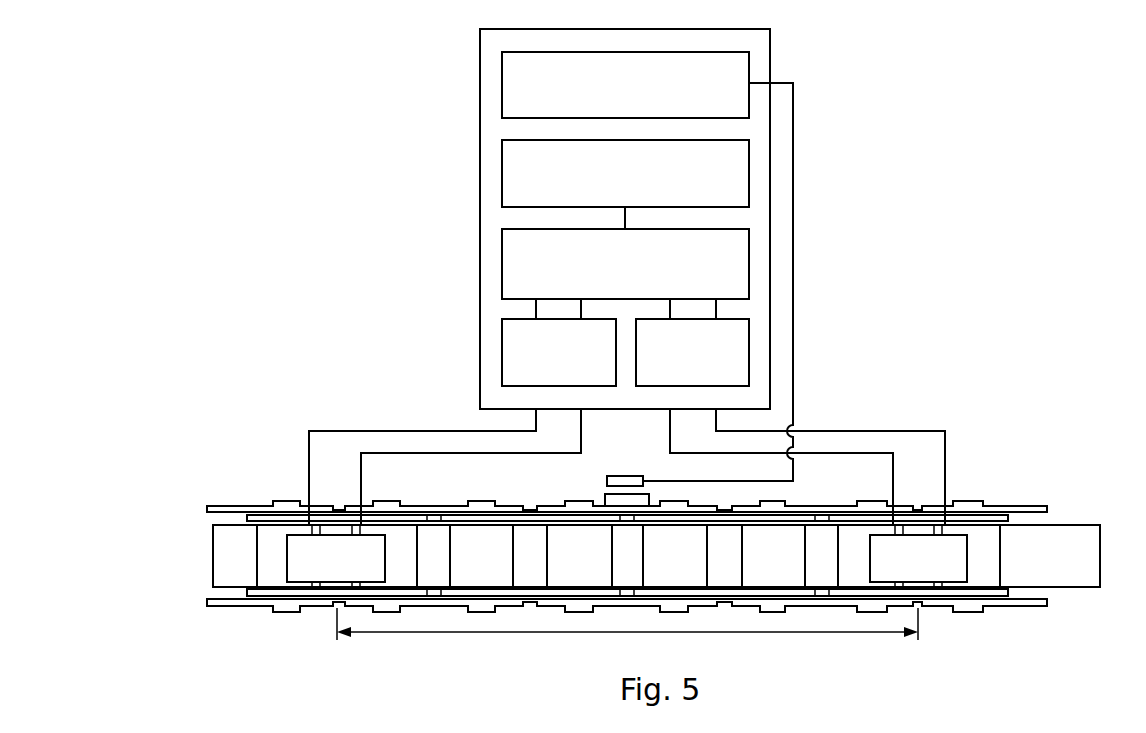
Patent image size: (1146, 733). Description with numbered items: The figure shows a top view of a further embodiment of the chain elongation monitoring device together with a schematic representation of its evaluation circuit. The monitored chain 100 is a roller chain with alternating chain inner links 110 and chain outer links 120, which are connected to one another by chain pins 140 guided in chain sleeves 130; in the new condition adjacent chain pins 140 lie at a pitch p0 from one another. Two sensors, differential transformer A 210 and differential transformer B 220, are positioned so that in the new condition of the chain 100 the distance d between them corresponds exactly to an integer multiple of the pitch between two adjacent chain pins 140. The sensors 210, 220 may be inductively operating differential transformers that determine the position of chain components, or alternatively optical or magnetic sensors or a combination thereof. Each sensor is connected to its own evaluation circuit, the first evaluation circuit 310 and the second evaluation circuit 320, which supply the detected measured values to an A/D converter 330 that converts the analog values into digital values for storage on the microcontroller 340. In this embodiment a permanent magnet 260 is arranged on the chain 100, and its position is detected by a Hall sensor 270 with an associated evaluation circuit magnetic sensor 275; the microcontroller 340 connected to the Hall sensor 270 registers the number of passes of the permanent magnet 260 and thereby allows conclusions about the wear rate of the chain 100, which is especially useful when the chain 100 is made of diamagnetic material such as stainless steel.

The chain 100 is at (178, 548).
The chain inner link 110 is at (207, 511).
The chain outer link 120 is at (230, 506).
The chain sleeve 130 is at (268, 573).
The chain pin 140 is at (290, 500).
The differential transformer A 210 is at (336, 556).
The differential transformer B 220 is at (918, 556).
The permanent magnet 260 is at (603, 492).
The Hall sensor/position detection sensor 270 is at (632, 475).
The evaluation circuit magnetic sensor 275 is at (625, 85).
The first evaluation circuit 310 is at (559, 352).
The second evaluation circuit 320 is at (692, 352).
The A/D converter 330 is at (625, 264).
The microcontroller/control unit 340 is at (625, 173).